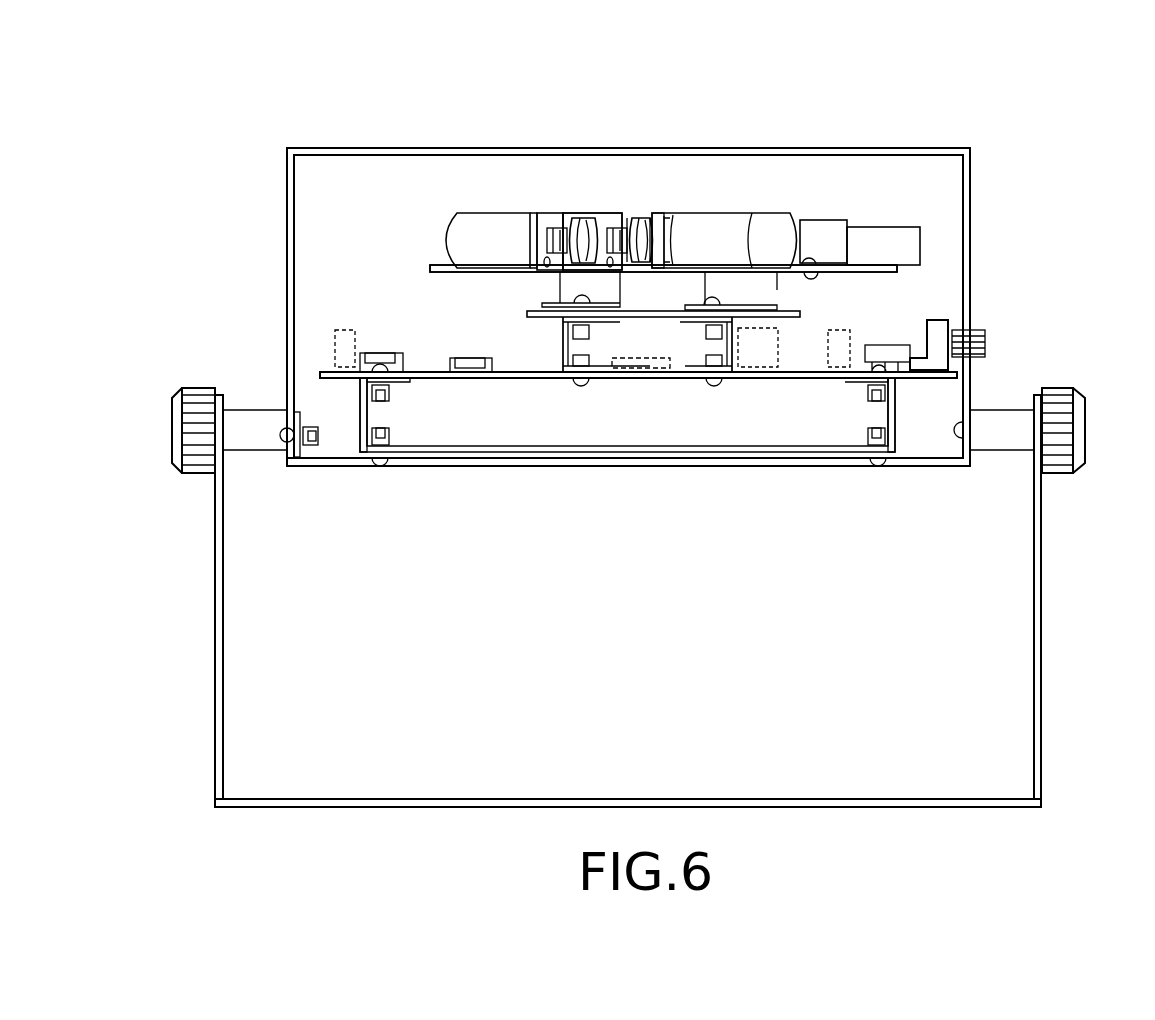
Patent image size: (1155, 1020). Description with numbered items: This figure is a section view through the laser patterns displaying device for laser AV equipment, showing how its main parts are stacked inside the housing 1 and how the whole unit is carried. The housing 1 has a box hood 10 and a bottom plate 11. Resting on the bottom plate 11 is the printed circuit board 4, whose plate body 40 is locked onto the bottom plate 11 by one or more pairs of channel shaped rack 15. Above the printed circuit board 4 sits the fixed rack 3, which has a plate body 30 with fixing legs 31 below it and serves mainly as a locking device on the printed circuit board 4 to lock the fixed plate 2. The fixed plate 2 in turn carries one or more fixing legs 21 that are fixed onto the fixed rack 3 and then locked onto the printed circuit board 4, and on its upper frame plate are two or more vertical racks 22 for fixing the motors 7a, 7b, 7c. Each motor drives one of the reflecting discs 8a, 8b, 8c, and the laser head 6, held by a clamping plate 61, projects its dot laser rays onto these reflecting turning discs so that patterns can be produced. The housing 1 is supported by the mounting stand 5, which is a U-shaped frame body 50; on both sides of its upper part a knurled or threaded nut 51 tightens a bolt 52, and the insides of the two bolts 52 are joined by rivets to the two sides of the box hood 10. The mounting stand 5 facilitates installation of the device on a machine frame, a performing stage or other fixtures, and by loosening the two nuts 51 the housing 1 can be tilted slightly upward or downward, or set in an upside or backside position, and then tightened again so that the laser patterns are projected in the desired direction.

The housing 1 is at (809, 146).
The fixed plate 2 is at (899, 274).
The fixed rack 3 is at (800, 314).
The printed circuit board 4 is at (460, 381).
The mounting stand 5 is at (1043, 660).
The laser head 6 is at (908, 224).
The motor 7a is at (578, 216).
The motor 7b is at (740, 215).
The motor 7c is at (468, 216).
The reflecting disc 8a is at (638, 222).
The reflecting disc 8b is at (655, 228).
The reflecting disc 8c is at (572, 224).
The box hood 10 is at (367, 148).
The bottom plate 11 is at (345, 458).
The channel shaped rack 15 is at (790, 435).
The fixing leg 21 is at (570, 295).
The vertical rack 22 is at (543, 222).
The plate body 30 is at (655, 318).
The support post 31 is at (560, 349).
The plate body 40 is at (612, 368).
The U-shaped frame body 50 is at (415, 805).
The nut 51 is at (185, 458).
The bolt 52 is at (255, 450).
The clamping plate 61 is at (822, 224).